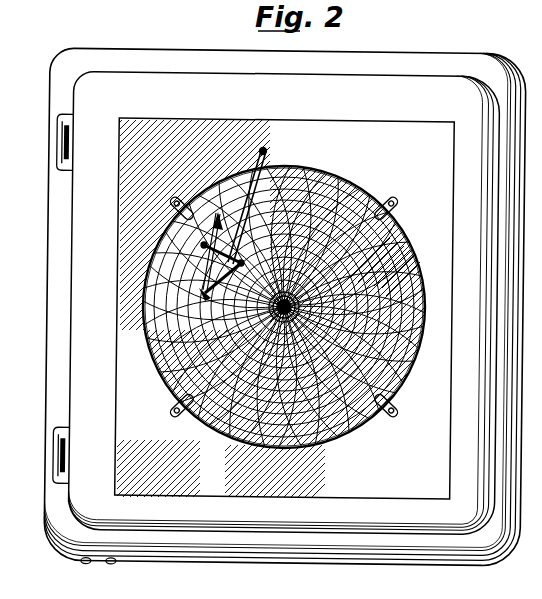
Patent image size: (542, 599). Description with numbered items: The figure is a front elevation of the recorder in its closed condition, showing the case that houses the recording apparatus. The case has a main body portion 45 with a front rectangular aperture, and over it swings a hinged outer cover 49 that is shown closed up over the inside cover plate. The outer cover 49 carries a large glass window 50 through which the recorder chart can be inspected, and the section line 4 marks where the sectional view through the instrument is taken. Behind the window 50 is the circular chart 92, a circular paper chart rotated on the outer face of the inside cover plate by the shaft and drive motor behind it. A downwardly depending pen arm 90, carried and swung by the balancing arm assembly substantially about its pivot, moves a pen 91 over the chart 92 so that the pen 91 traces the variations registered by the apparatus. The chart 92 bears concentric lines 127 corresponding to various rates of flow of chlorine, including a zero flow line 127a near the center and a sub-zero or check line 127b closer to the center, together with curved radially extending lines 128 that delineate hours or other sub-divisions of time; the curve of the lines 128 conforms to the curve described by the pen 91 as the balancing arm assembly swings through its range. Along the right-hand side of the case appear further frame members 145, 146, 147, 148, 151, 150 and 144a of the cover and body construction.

The section line 4- 4 is at (140, 598).
The main body portion 45 is at (411, 62).
The hinged outer cover 49 is at (462, 83).
The glass window 50 is at (189, 128).
The pen arm 90 is at (256, 172).
The pen 91 is at (203, 297).
The circular chart 92 is at (343, 185).
The concentric lines 127 is at (184, 419).
The zero flow line 127a is at (399, 262).
The sub-zero or check line 127b is at (399, 203).
The curved radially extending lines 128 is at (245, 440).
The frame member 145 is at (524, 326).
The frame member 146 is at (523, 378).
The frame member 147 is at (523, 397).
The frame member 148 is at (523, 416).
The frame member 151 is at (523, 436).
The frame member 150 is at (540, 468).
The frame member 144a is at (486, 565).